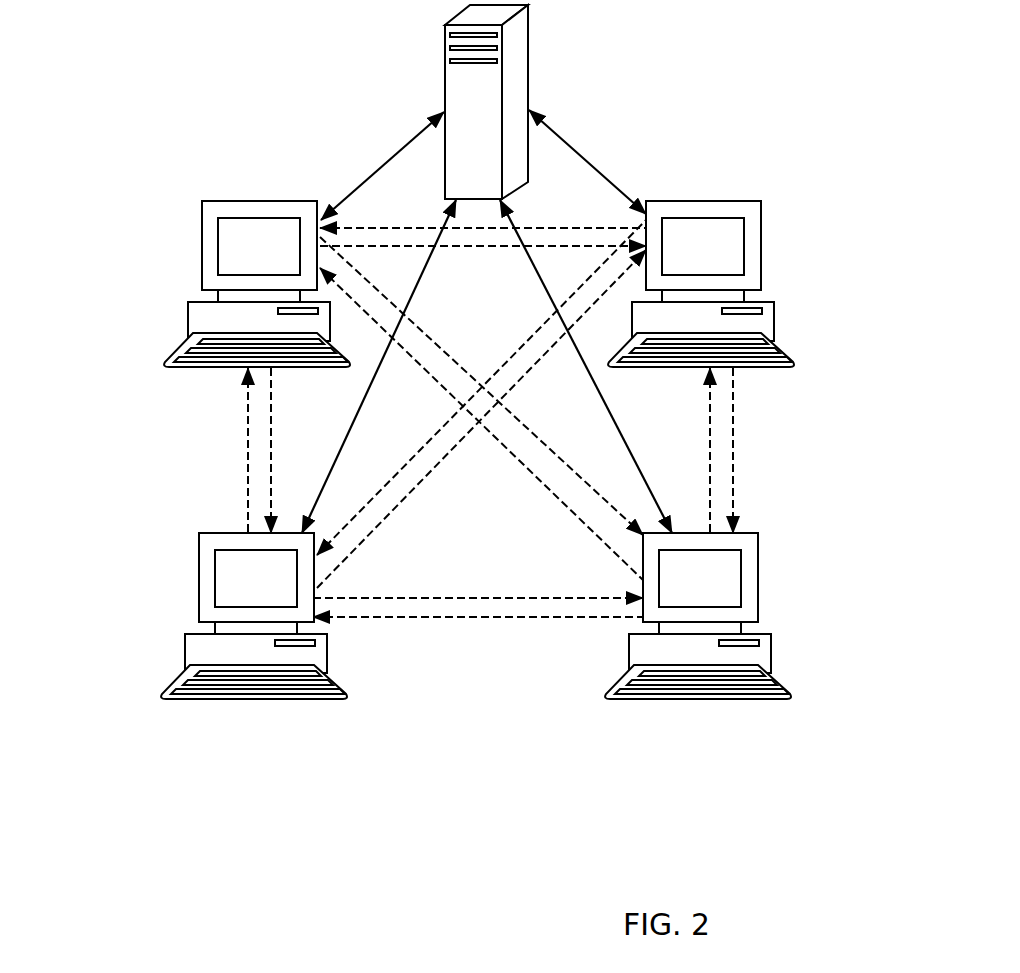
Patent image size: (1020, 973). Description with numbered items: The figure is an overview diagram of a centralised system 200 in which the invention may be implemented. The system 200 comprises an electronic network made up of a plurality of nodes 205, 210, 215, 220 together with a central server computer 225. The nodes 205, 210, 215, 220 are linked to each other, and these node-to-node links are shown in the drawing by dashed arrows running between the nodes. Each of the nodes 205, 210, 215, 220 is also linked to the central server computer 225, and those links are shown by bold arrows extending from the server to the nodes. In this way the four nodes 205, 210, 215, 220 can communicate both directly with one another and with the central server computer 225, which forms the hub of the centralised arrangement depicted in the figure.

The centralised system 200 is at (52, 834).
The node 205 is at (177, 628).
The node 210 is at (167, 262).
The node 215 is at (790, 280).
The node 220 is at (787, 628).
The central server computer 225 is at (540, 46).